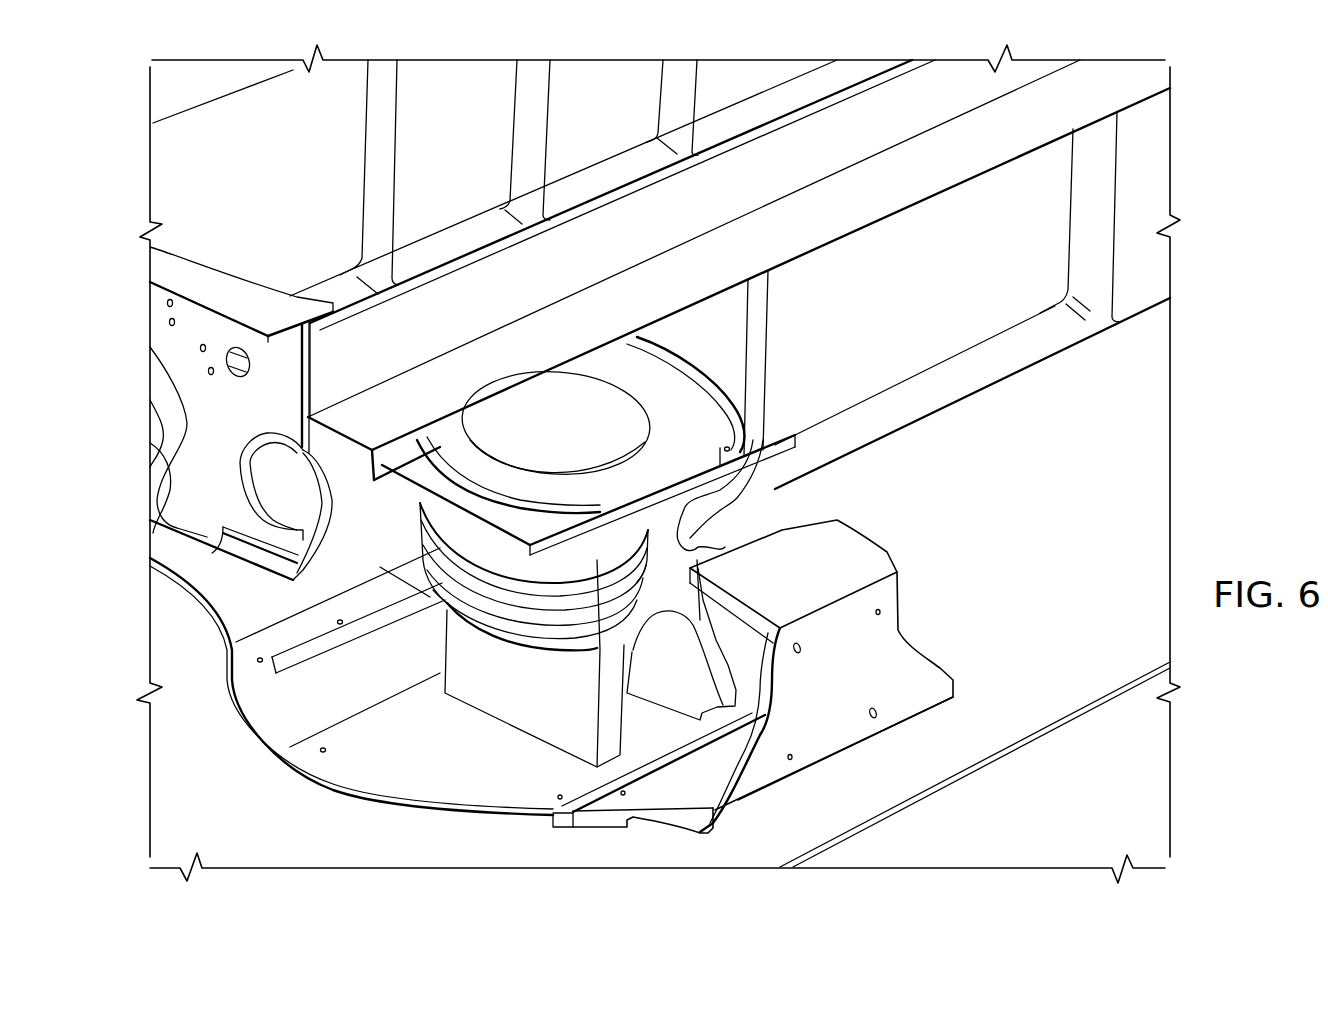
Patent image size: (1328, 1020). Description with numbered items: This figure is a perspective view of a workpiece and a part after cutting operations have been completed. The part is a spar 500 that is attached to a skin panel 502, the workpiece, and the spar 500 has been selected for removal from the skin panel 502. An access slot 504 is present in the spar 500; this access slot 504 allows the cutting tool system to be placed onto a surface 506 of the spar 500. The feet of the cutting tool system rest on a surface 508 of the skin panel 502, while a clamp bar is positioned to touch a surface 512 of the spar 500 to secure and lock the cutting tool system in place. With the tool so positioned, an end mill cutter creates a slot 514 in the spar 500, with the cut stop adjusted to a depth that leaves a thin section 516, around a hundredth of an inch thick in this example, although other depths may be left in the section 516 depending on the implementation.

The spar 500 is at (909, 604).
The skin panel 502 is at (186, 725).
The access slot 504 is at (814, 504).
The surface 506 is at (705, 776).
The surface 508 is at (224, 801).
The surface 512 is at (708, 393).
The slot 514 is at (571, 804).
The section 516 is at (578, 828).